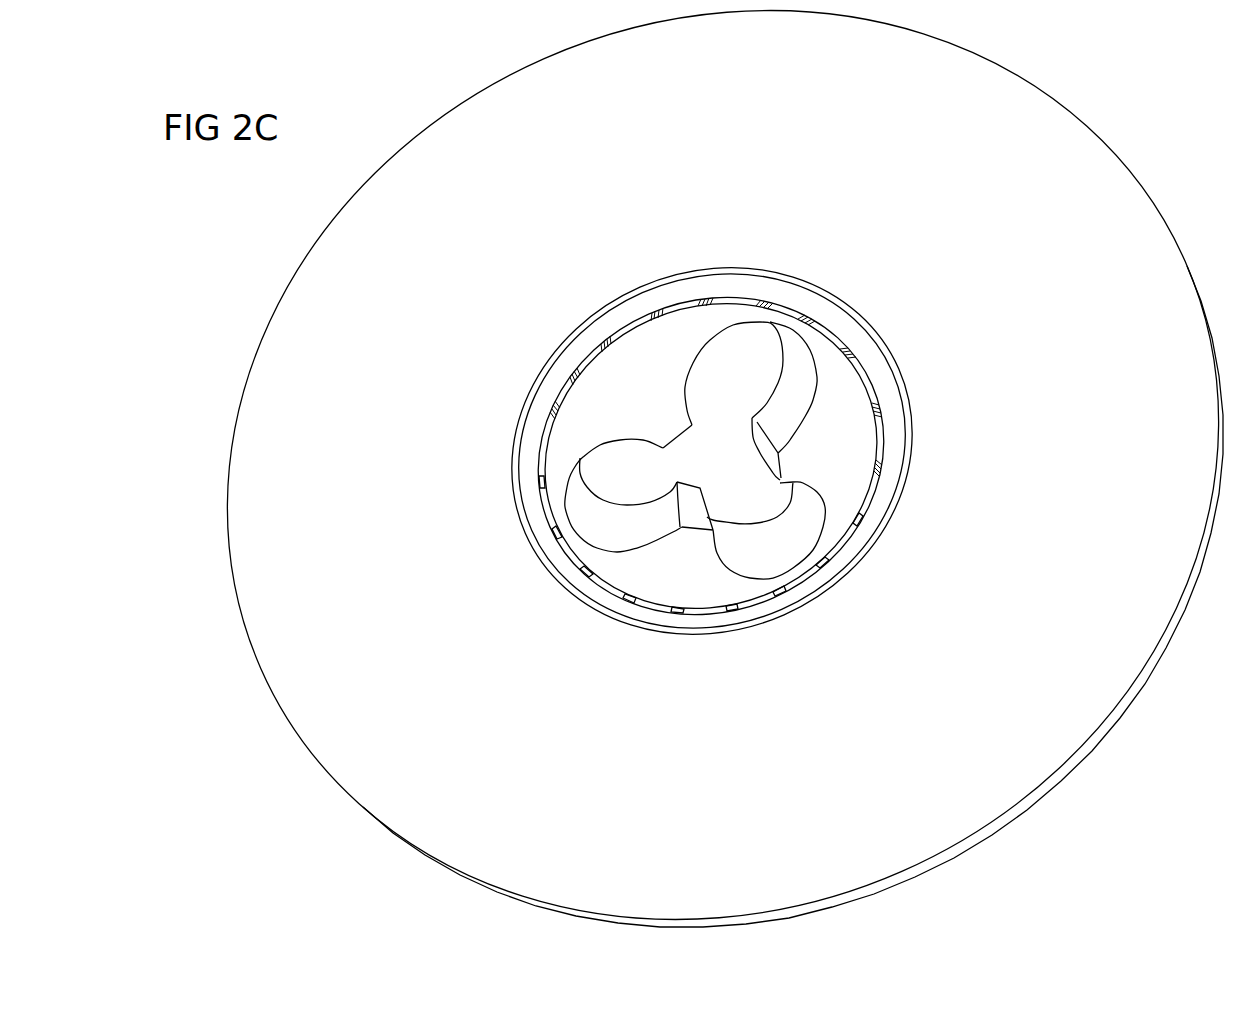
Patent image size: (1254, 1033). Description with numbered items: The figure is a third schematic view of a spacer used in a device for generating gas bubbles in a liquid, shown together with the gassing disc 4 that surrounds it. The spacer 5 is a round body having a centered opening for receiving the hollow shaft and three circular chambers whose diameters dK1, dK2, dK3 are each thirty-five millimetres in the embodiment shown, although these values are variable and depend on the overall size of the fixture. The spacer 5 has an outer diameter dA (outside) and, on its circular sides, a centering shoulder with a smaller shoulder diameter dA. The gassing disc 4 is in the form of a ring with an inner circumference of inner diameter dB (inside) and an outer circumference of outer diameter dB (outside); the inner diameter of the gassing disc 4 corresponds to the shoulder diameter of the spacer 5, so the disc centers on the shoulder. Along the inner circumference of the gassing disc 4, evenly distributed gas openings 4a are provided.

The gassing disc 4 is at (253, 497).
The gas openings 4a is at (587, 603).
The spacer 5 is at (603, 383).
The gassing disc diameter dB is at (1050, 92).
The spacer diameter dA is at (851, 297).
The diameter of chamber K1 dK1 is at (838, 416).
The diameter of chamber K2 dK2 is at (588, 420).
The diameter of chamber K3 dK3 is at (697, 573).